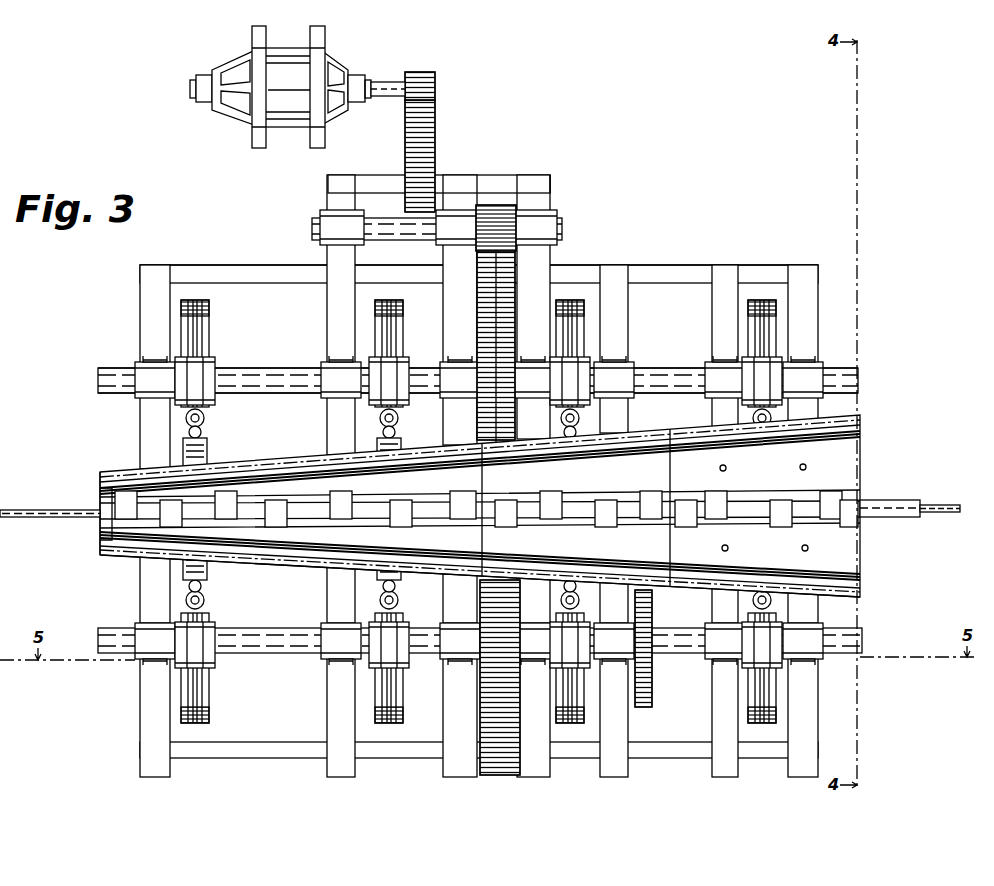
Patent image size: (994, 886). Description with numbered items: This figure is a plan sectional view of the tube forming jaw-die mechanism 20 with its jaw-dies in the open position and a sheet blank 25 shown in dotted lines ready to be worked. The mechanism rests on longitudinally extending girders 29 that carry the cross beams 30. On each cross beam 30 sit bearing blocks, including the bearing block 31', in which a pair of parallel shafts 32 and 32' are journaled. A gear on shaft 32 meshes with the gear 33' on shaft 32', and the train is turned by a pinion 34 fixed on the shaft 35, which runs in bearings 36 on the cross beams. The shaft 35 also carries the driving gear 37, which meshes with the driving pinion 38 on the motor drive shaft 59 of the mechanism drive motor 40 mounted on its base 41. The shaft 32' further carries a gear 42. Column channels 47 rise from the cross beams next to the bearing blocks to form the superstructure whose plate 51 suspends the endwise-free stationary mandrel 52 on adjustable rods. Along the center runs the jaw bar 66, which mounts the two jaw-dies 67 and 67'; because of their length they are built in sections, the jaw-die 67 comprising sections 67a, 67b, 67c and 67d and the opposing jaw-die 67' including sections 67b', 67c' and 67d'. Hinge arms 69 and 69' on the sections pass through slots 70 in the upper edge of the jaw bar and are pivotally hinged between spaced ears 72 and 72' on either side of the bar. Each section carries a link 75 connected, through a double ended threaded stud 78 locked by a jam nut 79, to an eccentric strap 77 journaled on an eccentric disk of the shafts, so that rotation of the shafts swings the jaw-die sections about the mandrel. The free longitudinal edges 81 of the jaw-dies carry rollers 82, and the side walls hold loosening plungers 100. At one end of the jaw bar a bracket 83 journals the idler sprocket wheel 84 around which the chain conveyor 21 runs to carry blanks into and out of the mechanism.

The tube forming jaw-die mechanism 20 is at (672, 262).
The chain conveyor 21 is at (30, 508).
The sheet blank 25 is at (100, 478).
The longitudinally extending girders 29 is at (283, 282).
The cross beams 30 is at (712, 300).
The bearing block 31' is at (495, 625).
The shaft 32 is at (478, 380).
The shaft 32' is at (480, 627).
The gear 33' is at (513, 677).
The pinion 34 is at (497, 205).
The shaft 35 is at (562, 228).
The bearings 36 is at (437, 210).
The driving gear 37 is at (436, 153).
The driving pinion 38 is at (436, 92).
The mechanism drive motor 40 is at (296, 122).
The base 41 is at (259, 150).
The gear 42 is at (646, 707).
The column channels 47 is at (618, 360).
The plate 51 is at (712, 348).
The stationary mandrel 52 is at (255, 368).
The motor shaft 59 is at (380, 82).
The jaw bar 66 is at (558, 505).
The jaw-die 67 is at (502, 506).
The jaw-die 67' is at (504, 568).
The jaw-die section 67a is at (224, 464).
The jaw-die section 67b is at (406, 451).
The jaw-die section 67b' is at (406, 571).
The jaw-die section 67c is at (579, 435).
The jaw-die section 67c' is at (587, 583).
The jaw-die section 67d is at (783, 425).
The jaw-die section 67d' is at (783, 593).
The hinge arm 69 is at (561, 518).
The hinge arm 69' is at (528, 503).
The slots 70 is at (352, 505).
The spaced ears 72 is at (499, 520).
The spaced ears 72' is at (428, 499).
The link 75 is at (208, 446).
The eccentric strap 77 is at (208, 336).
The double ended threaded stud 78 is at (398, 420).
The locking jam nut 79 is at (206, 417).
The free longitudinal edges 81 is at (862, 428).
The rollers 82 is at (312, 468).
The bracket 83 is at (868, 518).
The chain conveyor idler sprocket wheel 84 is at (924, 513).
The loosening plungers 100 is at (800, 470).